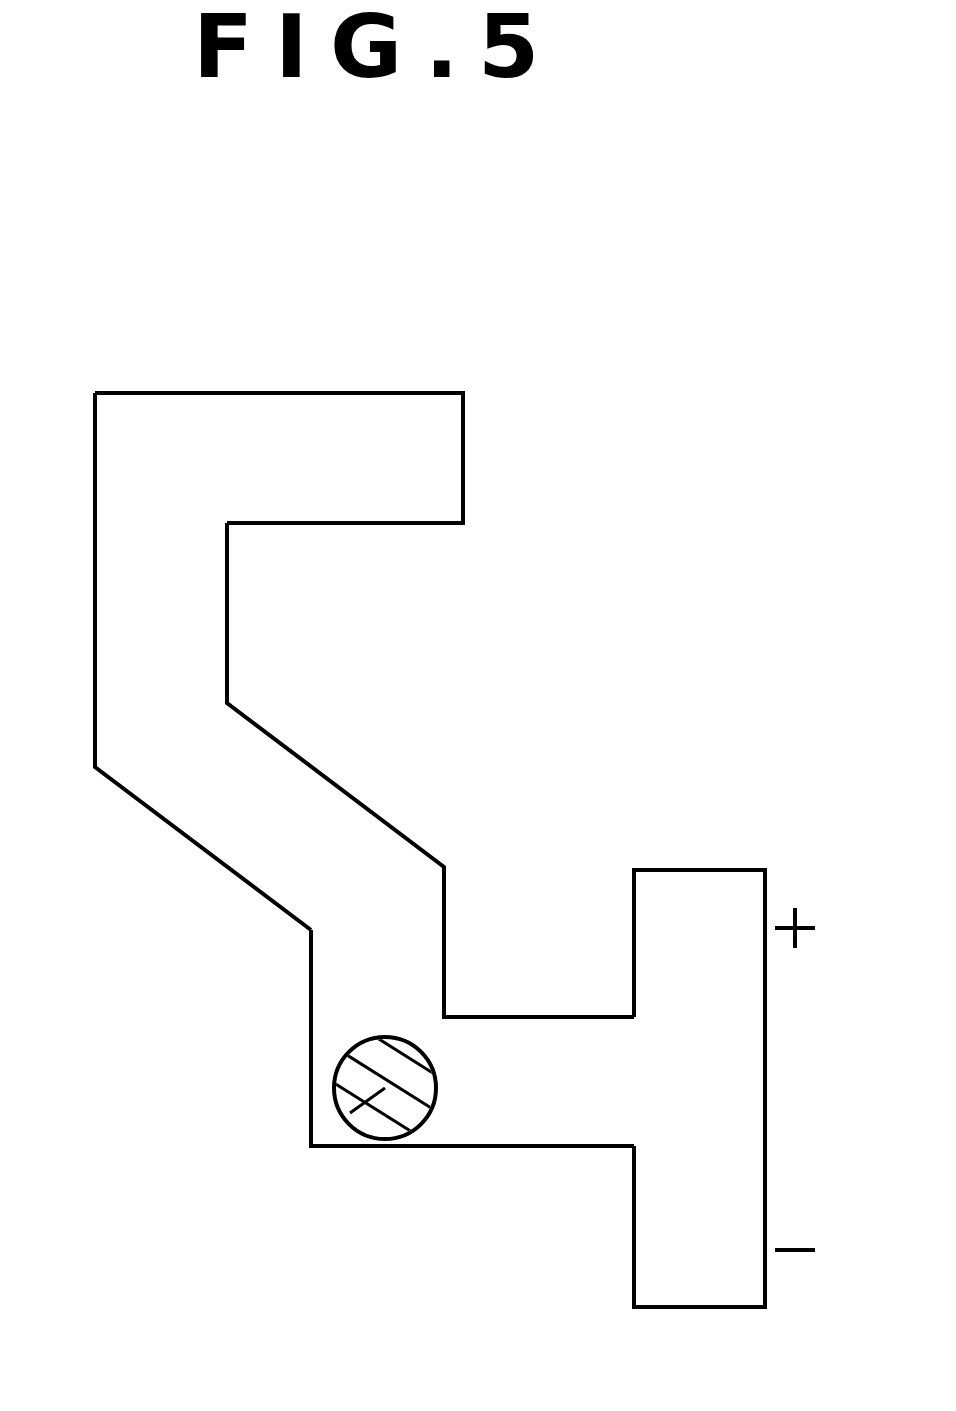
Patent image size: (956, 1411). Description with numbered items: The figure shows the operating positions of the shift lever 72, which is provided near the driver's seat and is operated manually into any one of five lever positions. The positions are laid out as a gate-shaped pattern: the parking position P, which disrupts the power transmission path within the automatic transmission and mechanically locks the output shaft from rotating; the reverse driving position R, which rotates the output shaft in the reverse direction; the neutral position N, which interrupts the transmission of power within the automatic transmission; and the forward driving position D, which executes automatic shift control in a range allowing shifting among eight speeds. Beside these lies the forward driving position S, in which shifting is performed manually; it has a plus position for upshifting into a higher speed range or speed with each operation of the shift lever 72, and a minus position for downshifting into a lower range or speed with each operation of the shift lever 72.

The shift lever 72 is at (347, 1118).
The parking position P is at (279, 428).
The reverse driving position R is at (175, 661).
The neutral position N is at (430, 770).
The forward driving position D is at (442, 1038).
The manual forward driving position S is at (724, 1088).